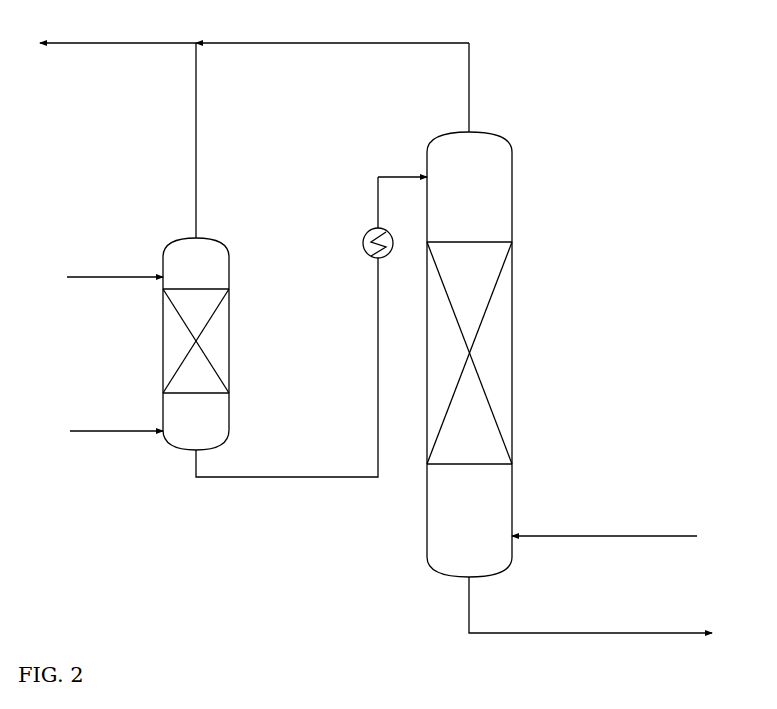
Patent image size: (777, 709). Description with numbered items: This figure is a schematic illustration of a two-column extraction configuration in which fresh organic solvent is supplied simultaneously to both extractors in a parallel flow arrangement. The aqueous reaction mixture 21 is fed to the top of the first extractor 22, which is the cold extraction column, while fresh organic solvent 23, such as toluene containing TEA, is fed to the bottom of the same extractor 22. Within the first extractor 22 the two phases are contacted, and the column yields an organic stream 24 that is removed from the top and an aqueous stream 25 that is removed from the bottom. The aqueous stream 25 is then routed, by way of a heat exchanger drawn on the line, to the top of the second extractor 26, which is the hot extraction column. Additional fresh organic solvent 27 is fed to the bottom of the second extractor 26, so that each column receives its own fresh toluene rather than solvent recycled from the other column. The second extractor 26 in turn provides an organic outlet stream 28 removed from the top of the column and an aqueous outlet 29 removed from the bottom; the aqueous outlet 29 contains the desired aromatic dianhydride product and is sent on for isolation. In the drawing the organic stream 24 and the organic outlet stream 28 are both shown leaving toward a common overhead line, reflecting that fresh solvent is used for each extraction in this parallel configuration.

The aqueous reaction mixture 21 is at (101, 277).
The first extractor 22 is at (196, 344).
The fresh organic solvent 23 is at (101, 431).
The organic stream 24 is at (118, 140).
The aqueous stream 25 is at (311, 341).
The second extractor 26 is at (469, 354).
The additional fresh organic solvent 27 is at (604, 519).
The organic outlet stream 28 is at (345, 87).
The aqueous outlet 29 is at (590, 605).